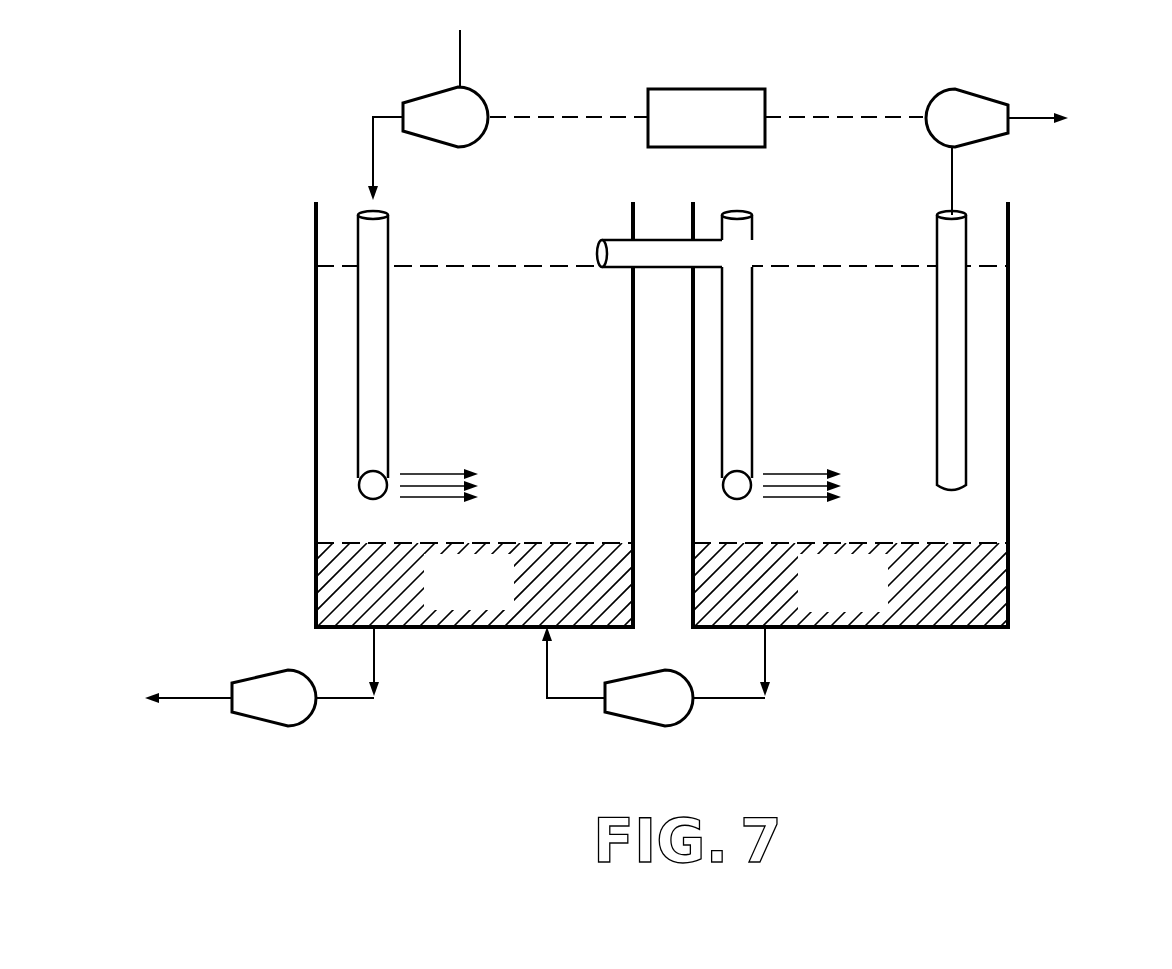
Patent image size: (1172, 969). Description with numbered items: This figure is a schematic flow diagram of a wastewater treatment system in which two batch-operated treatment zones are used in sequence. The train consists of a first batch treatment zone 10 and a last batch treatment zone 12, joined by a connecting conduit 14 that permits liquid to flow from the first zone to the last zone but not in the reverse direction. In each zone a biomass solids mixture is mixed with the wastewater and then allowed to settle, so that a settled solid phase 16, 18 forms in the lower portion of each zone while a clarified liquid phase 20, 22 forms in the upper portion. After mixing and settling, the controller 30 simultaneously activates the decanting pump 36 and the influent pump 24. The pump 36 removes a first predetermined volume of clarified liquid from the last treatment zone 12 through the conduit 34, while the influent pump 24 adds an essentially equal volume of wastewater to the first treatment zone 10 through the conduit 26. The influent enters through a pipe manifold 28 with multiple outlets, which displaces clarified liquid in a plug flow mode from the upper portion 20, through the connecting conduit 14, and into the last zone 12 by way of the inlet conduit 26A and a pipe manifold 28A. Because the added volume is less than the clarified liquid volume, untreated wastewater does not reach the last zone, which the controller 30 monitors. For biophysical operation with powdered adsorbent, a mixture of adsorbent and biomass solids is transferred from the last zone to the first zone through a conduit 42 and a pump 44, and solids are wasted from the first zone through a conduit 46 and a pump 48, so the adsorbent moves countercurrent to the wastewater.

The first batch treatment zone 10 is at (316, 380).
The last batch treatment zone 12 is at (1008, 430).
The conduit 14 is at (502, 320).
The settled solid phase 16 is at (503, 602).
The settled solid phase 18 is at (875, 605).
The clarified liquid phase 20 is at (530, 393).
The clarified liquid phase 22 is at (920, 375).
The influent pump 24 is at (440, 92).
The conduit 26 is at (358, 255).
The inlet conduit 26A is at (752, 255).
The pipe manifold 28 is at (360, 493).
The pipe manifold 28A is at (722, 493).
The controller 30 is at (720, 98).
The conduit 34 is at (966, 340).
The pump 36 is at (973, 92).
The conduit 42 is at (547, 675).
The pump 44 is at (640, 725).
The conduit 46 is at (360, 700).
The pump 48 is at (262, 723).